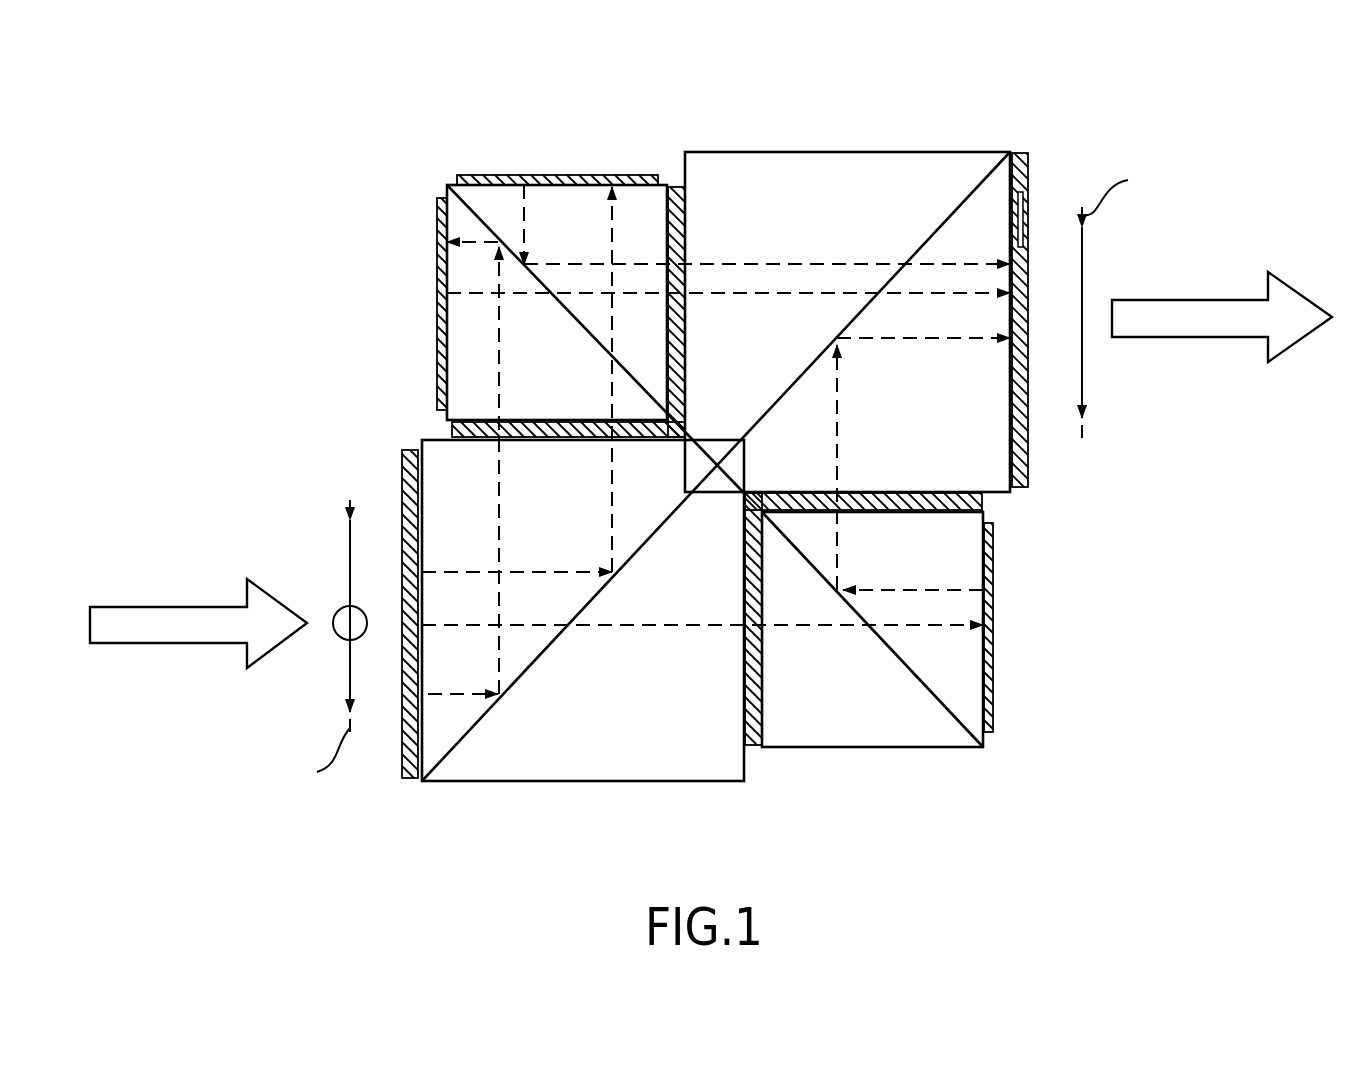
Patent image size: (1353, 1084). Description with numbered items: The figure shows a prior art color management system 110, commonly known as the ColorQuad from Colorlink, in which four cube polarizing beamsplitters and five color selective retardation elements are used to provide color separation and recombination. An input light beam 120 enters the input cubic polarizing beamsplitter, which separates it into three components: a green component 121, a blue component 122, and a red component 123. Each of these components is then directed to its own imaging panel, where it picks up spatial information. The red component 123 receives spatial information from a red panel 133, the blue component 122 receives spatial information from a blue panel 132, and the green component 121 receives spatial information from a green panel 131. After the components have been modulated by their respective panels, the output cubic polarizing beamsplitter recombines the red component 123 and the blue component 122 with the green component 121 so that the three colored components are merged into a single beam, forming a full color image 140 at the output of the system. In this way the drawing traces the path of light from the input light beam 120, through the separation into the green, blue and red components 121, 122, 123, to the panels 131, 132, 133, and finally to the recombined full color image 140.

The color management system 110 is at (880, 177).
The input light beam 120 is at (193, 605).
The green component 121 is at (913, 338).
The blue component 122 is at (448, 693).
The red component 123 is at (558, 567).
The green panel 131 is at (1087, 628).
The blue panel 132 is at (347, 295).
The red panel 133 is at (592, 122).
The full color image 140 is at (1172, 300).